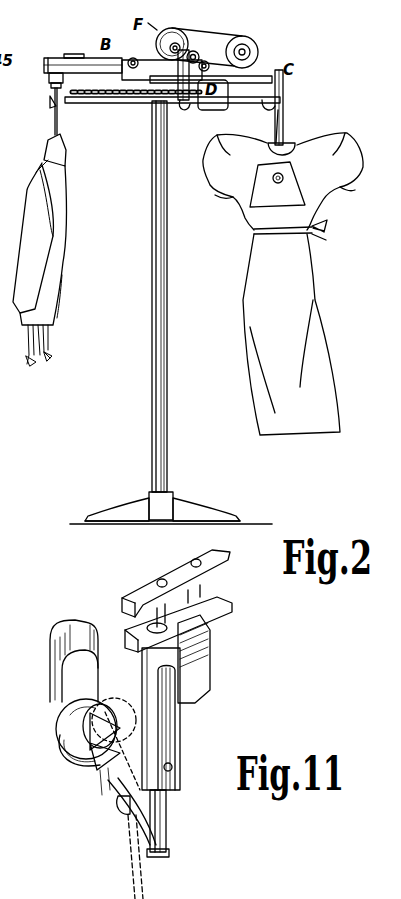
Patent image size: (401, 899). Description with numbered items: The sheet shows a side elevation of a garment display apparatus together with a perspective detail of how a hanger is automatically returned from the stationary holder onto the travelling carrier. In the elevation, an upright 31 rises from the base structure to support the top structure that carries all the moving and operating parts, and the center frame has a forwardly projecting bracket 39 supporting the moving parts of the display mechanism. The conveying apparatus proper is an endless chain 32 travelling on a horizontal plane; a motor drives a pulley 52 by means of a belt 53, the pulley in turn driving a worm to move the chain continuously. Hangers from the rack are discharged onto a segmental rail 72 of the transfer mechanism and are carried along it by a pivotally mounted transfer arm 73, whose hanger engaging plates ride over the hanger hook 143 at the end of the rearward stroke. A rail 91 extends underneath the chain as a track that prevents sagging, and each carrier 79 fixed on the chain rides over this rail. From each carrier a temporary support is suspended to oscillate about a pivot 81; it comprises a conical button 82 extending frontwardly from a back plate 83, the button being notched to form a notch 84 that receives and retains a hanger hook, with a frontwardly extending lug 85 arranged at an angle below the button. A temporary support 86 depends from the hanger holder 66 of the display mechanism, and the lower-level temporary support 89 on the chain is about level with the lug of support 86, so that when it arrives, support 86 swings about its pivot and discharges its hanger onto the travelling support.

In FIG. 2, the upright 31 is at (155, 188).
In FIG. 2, the endless chain 32 is at (93, 95).
In FIG. 11, the endless chain 32 is at (170, 580).
In FIG. 2, the forwardly projecting bracket 39 is at (62, 43).
In FIG. 2, the pulley 52 is at (257, 50).
In FIG. 2, the belt 53 is at (232, 34).
In FIG. 11, the hanger holder 66 is at (55, 643).
In FIG. 2, the segmental rail 72 is at (217, 88).
In FIG. 2, the transfer arm 73 is at (190, 90).
In FIG. 11, the carrier 79 is at (177, 734).
In FIG. 11, the pivot 81 is at (172, 765).
In FIG. 11, the conical button 82 is at (95, 774).
In FIG. 11, the back plate 83 is at (167, 838).
In FIG. 11, the notch 84 is at (67, 735).
In FIG. 11, the lug 85 is at (118, 805).
In FIG. 11, the temporary support 86 is at (57, 716).
In FIG. 11, the temporary support 89 is at (169, 853).
In FIG. 2, the rail 91 is at (118, 103).
In FIG. 2, the hanger hook 143 is at (283, 127).
In FIG. 11, the hanger hook 143 is at (106, 704).